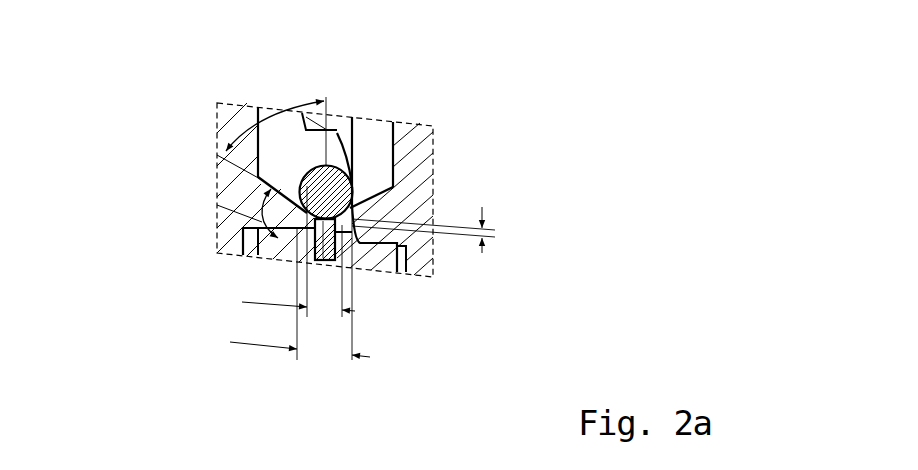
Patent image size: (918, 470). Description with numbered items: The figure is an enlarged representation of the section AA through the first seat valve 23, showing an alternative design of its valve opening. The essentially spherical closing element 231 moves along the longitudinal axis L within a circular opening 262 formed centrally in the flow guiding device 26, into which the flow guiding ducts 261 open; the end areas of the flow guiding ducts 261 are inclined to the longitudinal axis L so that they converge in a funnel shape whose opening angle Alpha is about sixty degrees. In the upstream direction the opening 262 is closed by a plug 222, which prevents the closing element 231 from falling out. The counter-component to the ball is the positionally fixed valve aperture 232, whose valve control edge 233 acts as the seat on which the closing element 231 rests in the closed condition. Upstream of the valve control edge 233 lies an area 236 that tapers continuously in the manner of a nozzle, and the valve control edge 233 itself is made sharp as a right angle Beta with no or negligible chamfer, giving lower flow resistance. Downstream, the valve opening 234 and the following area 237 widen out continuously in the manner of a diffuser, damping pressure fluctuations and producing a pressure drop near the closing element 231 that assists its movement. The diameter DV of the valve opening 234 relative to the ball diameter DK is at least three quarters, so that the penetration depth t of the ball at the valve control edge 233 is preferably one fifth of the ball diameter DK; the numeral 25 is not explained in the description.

The plug 222 is at (339, 130).
The area tapering in the manner of a nozzle 236 is at (386, 196).
The flow guiding device 26 is at (400, 140).
The flow guiding ducts 261 is at (232, 164).
The valve control edge 233 is at (362, 214).
The first seat valve 23 is at (356, 209).
The valve aperture 232 is at (367, 224).
The opening 262 is at (303, 163).
The closing element 231 is at (240, 253).
The valve pin 25 is at (331, 262).
The valve opening 234 is at (348, 238).
The area widening in the manner of a diffuser 237 is at (409, 272).
The longitudinal axis L is at (327, 130).
The penetration depth t is at (482, 234).
The opening angle Alpha is at (266, 108).
The angle of the valve control edge Beta is at (265, 213).
The section AA is at (220, 108).
The diameter of the valve opening DV is at (298, 251).
The ball diameter DK is at (300, 282).